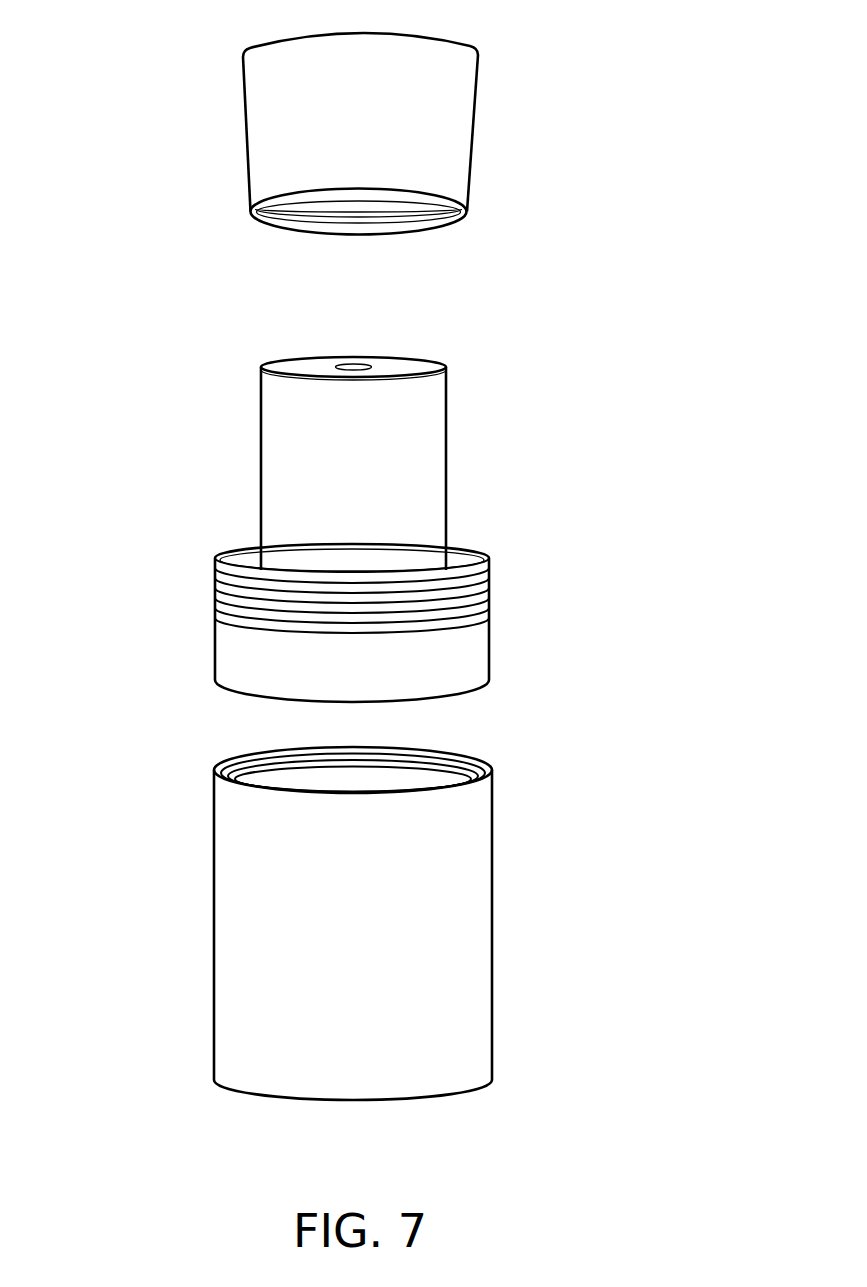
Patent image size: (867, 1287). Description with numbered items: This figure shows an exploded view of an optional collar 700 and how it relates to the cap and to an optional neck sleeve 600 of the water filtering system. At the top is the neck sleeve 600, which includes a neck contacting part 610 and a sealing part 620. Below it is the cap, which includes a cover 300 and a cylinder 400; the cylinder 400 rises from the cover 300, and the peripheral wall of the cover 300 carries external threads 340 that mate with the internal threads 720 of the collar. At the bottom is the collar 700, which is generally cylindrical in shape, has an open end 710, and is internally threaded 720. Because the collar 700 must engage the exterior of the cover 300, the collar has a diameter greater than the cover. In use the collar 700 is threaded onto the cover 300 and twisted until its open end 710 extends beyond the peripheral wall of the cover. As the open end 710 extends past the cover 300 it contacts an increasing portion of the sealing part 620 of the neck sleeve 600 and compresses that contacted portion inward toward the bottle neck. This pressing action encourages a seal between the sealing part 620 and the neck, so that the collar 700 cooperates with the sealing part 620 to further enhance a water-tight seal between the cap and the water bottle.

The neck sleeve 600 is at (169, 154).
The neck contacting part 610 is at (427, 232).
The sealing part 620 is at (457, 156).
The cylinder 400 is at (447, 488).
The cover 300 is at (456, 622).
The threads 340 is at (525, 651).
The collar 700 is at (431, 893).
The open end 710 is at (462, 748).
The internal threads 720 is at (266, 766).